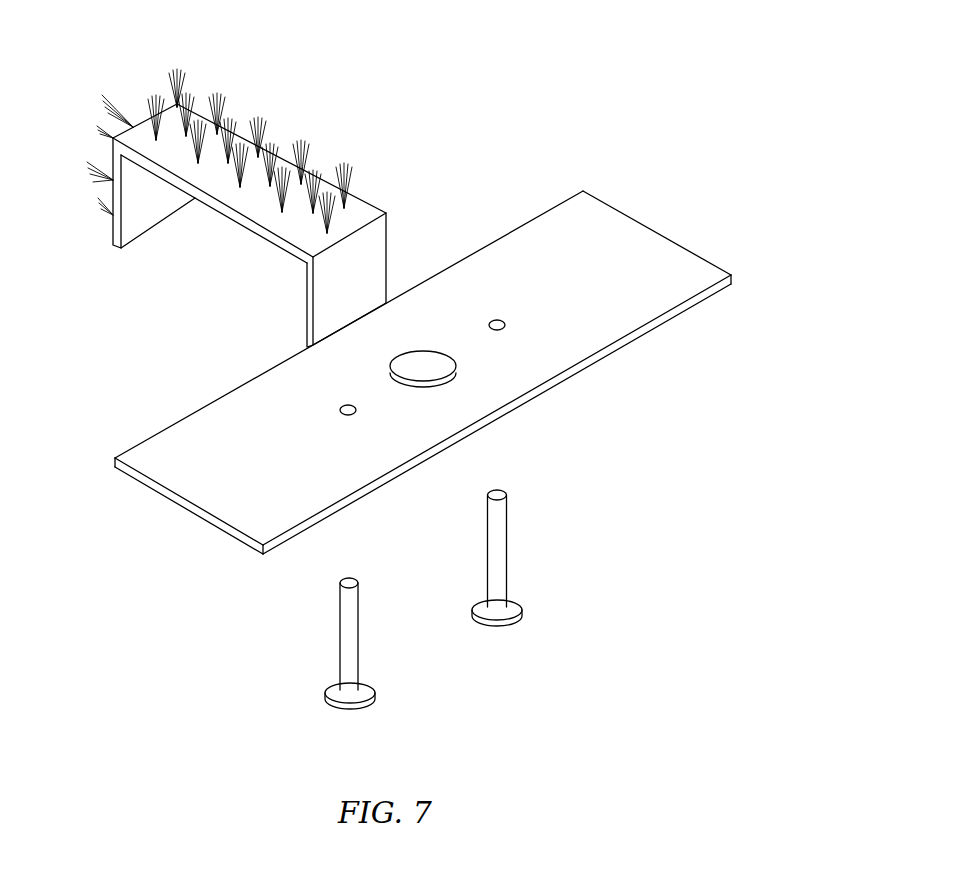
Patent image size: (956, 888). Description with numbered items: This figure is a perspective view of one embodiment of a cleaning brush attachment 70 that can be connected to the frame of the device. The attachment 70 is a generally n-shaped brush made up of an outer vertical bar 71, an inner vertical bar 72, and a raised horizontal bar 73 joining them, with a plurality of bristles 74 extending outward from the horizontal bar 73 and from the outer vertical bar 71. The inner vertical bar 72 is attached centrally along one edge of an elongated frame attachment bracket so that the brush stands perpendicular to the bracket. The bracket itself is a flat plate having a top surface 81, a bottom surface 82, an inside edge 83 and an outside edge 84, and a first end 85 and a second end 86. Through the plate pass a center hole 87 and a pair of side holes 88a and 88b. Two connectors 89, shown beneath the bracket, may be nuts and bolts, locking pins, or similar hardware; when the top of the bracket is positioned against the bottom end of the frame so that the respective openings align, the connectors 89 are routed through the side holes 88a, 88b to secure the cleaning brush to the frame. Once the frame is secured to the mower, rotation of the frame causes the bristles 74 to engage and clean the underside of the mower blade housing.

The cleaning brush attachment 70 is at (560, 82).
The outer vertical bar 71 is at (113, 231).
The inner vertical bar 72 is at (372, 242).
The raised horizontal bar 73 is at (243, 132).
The bristles 74 is at (160, 112).
The top surface 81 is at (248, 475).
The bottom surface 82 is at (643, 335).
The inside edge 83 is at (523, 225).
The outside edge 84 is at (575, 372).
The first end 85 is at (650, 228).
The second end 86 is at (190, 510).
The center hole 87 is at (422, 370).
The side hole 88a is at (497, 322).
The side hole 88b is at (346, 408).
The connectors 89 is at (350, 633).